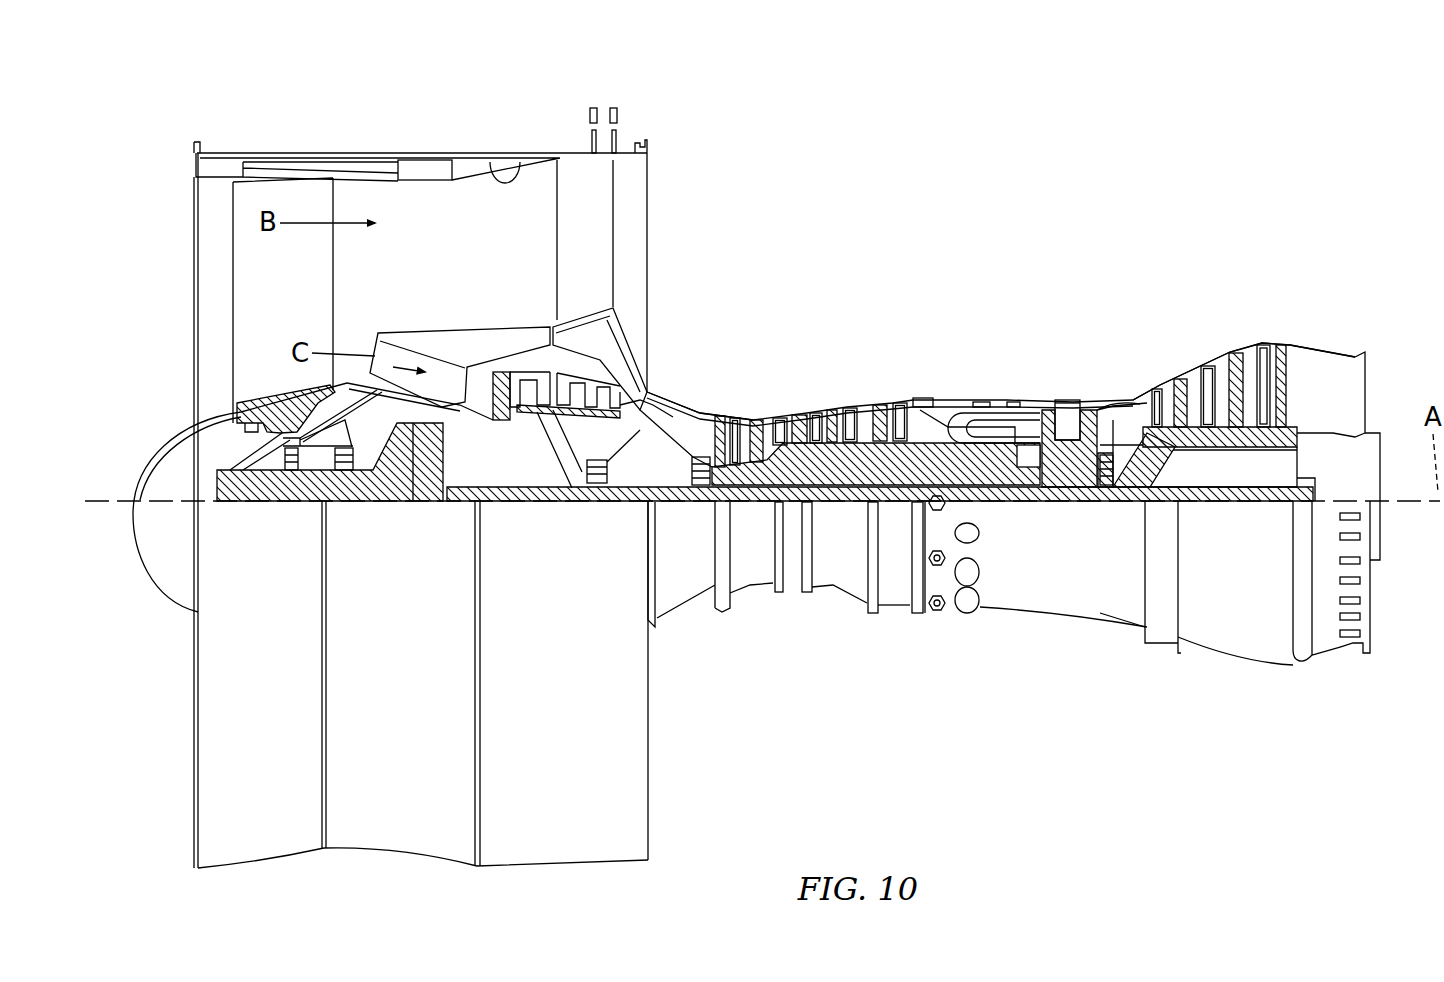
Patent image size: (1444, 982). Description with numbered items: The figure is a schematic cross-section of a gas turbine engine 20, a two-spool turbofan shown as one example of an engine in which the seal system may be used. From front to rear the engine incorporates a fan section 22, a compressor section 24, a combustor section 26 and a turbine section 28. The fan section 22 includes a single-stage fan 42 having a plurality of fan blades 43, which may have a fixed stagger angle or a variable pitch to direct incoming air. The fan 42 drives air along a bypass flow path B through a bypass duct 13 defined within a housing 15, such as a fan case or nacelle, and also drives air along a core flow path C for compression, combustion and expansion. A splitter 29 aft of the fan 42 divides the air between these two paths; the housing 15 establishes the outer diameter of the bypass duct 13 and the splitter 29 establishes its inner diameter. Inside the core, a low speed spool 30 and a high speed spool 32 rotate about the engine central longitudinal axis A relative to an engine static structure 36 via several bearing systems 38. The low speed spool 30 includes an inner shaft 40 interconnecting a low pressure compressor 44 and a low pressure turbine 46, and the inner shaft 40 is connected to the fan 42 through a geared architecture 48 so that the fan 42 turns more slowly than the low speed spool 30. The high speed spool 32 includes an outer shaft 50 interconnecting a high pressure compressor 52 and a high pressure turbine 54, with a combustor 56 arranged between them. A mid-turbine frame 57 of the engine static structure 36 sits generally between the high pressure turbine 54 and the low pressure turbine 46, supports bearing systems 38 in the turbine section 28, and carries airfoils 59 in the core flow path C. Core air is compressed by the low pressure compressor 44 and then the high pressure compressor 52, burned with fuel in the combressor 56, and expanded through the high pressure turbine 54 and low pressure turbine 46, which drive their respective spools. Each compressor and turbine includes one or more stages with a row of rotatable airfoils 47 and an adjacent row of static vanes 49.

The bypass duct 13 is at (518, 165).
The housing 15 is at (426, 152).
The gas turbine engine 20 is at (1045, 244).
The fan section 22 is at (341, 140).
The compressor section 24 is at (702, 395).
The combustor section 26 is at (976, 390).
The turbine section 28 is at (1173, 331).
The splitter 29 is at (392, 327).
The low speed spool 30 is at (849, 508).
The high speed spool 32 is at (898, 463).
The engine static structure 36 is at (895, 610).
The bearing systems 38 is at (592, 497).
The inner shaft 40 is at (667, 503).
The fan 42 is at (258, 291).
The fan blades 43 is at (320, 302).
The low pressure compressor 44 is at (553, 382).
The low pressure turbine 46 is at (1220, 360).
The rotatable airfoils 47 is at (500, 380).
The geared architecture 48 is at (428, 480).
The static vanes 49 is at (520, 380).
The outer shaft 50 is at (993, 483).
The high pressure compressor 52 is at (817, 413).
The high pressure turbine 54 is at (1068, 395).
The combustor 56 is at (988, 428).
The mid-turbine frame 57 is at (1120, 383).
The airfoils 59 is at (1117, 417).